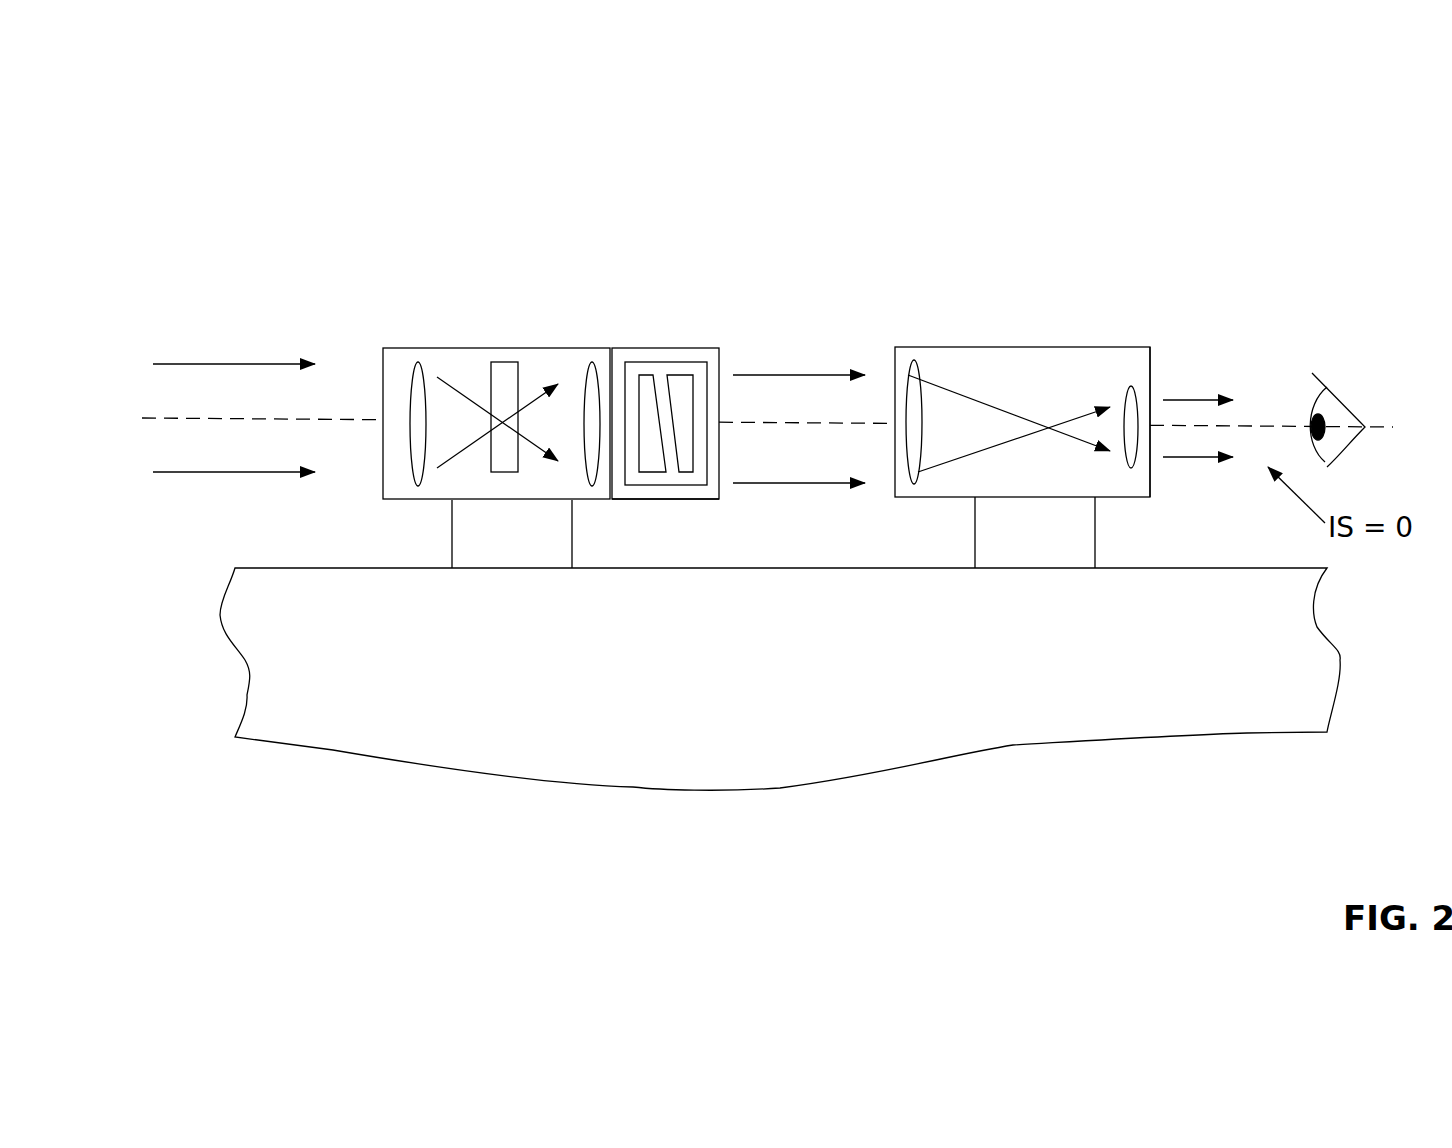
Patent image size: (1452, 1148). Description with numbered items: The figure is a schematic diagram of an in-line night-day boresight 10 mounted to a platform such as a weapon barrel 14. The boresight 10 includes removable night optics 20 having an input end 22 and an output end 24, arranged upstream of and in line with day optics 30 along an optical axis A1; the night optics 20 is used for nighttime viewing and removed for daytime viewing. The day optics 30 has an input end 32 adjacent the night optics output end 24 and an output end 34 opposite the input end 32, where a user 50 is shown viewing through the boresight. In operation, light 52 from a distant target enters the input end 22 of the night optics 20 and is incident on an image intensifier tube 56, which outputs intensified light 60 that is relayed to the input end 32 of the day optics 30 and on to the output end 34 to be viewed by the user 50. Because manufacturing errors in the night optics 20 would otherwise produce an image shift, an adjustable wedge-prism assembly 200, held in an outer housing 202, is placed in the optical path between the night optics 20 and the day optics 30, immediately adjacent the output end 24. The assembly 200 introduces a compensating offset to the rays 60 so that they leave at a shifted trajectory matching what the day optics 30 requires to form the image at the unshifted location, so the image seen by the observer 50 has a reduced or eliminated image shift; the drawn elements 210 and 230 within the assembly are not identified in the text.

The in-line night-day boresight 10 is at (833, 317).
The weapon barrel 14 is at (767, 698).
The night optics 20 is at (532, 348).
The input end 22 is at (383, 392).
The output end 24 is at (720, 363).
The day optics 30 is at (1030, 347).
The input end 32 is at (893, 375).
The output end 34 is at (1152, 353).
The user 50 is at (1375, 375).
The light 52 is at (290, 350).
The image intensifier tube 56 is at (503, 362).
The intensified light 60 is at (815, 373).
The adjustable wedge-prism assembly 200 is at (693, 362).
The outer housing 202 is at (653, 500).
The first shutter blade 210 is at (655, 388).
The second shutter blade 230 is at (680, 388).
The optical axis A1 is at (142, 418).